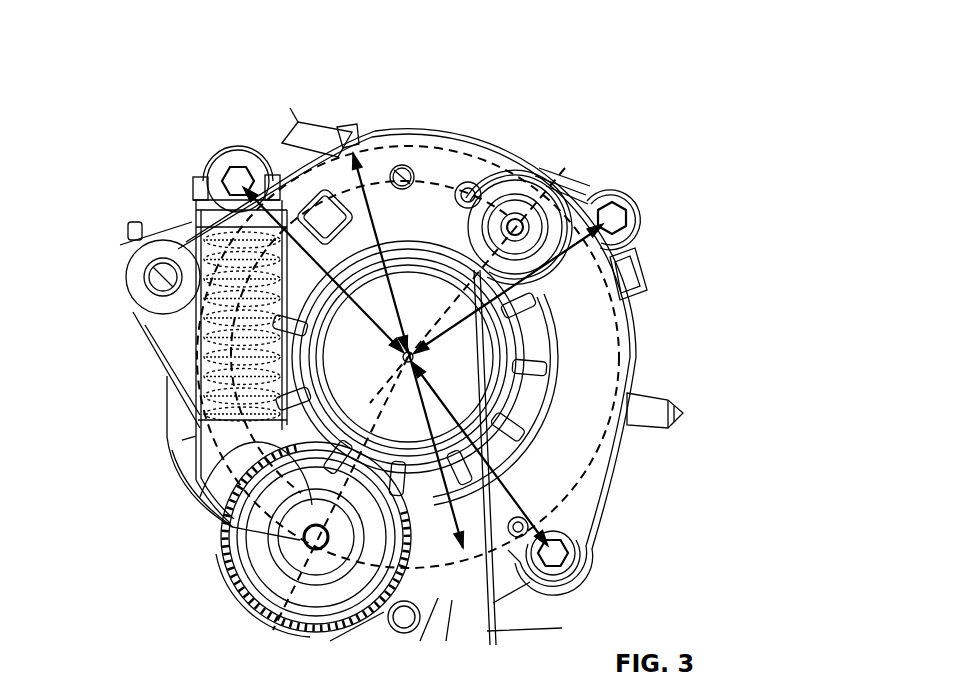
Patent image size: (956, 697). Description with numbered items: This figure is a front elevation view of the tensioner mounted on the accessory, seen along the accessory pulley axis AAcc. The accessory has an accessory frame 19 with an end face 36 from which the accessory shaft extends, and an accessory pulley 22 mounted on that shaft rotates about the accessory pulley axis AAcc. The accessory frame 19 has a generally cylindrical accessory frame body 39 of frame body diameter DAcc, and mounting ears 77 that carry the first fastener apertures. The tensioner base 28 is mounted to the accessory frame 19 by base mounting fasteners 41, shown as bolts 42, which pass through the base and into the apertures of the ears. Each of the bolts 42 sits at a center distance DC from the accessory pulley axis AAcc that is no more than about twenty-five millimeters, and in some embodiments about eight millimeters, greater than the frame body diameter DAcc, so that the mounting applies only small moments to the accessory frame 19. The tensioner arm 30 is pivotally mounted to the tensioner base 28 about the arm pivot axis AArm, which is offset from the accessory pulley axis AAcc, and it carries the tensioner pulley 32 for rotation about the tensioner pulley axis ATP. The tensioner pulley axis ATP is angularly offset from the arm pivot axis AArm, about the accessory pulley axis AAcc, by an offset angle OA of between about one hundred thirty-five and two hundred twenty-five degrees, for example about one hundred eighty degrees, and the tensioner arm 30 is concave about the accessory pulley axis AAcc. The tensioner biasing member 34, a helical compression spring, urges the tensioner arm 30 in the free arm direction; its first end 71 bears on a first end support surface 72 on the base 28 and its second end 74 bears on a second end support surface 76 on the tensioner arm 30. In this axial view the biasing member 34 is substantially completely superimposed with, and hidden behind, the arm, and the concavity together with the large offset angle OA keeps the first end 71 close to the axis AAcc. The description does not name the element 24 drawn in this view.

The accessory frame 19 is at (497, 601).
The accessory pulley 22 is at (477, 375).
The belt 24 is at (492, 631).
The tensioner base 28 is at (627, 338).
The tensioner arm 30 is at (438, 168).
The tensioner pulley 32 is at (243, 586).
The tensioner biasing member 34 is at (180, 368).
The end face 36 is at (617, 300).
The accessory frame body 39 is at (563, 586).
The base mounting fasteners 41 is at (433, 307).
The bolts 42 is at (227, 167).
The first end 71 is at (294, 166).
The first end support surface 72 is at (318, 200).
The second end 74 is at (245, 404).
The second end support surface 76 is at (283, 430).
The mounting ears 77 is at (255, 148).
The center distance DC is at (345, 250).
The offset angle OA is at (374, 250).
The arm pivot axis AArm is at (513, 222).
The accessory pulley axis AAcc is at (414, 357).
The frame body diameter DAcc is at (430, 413).
The tensioner pulley axis ATP is at (308, 537).